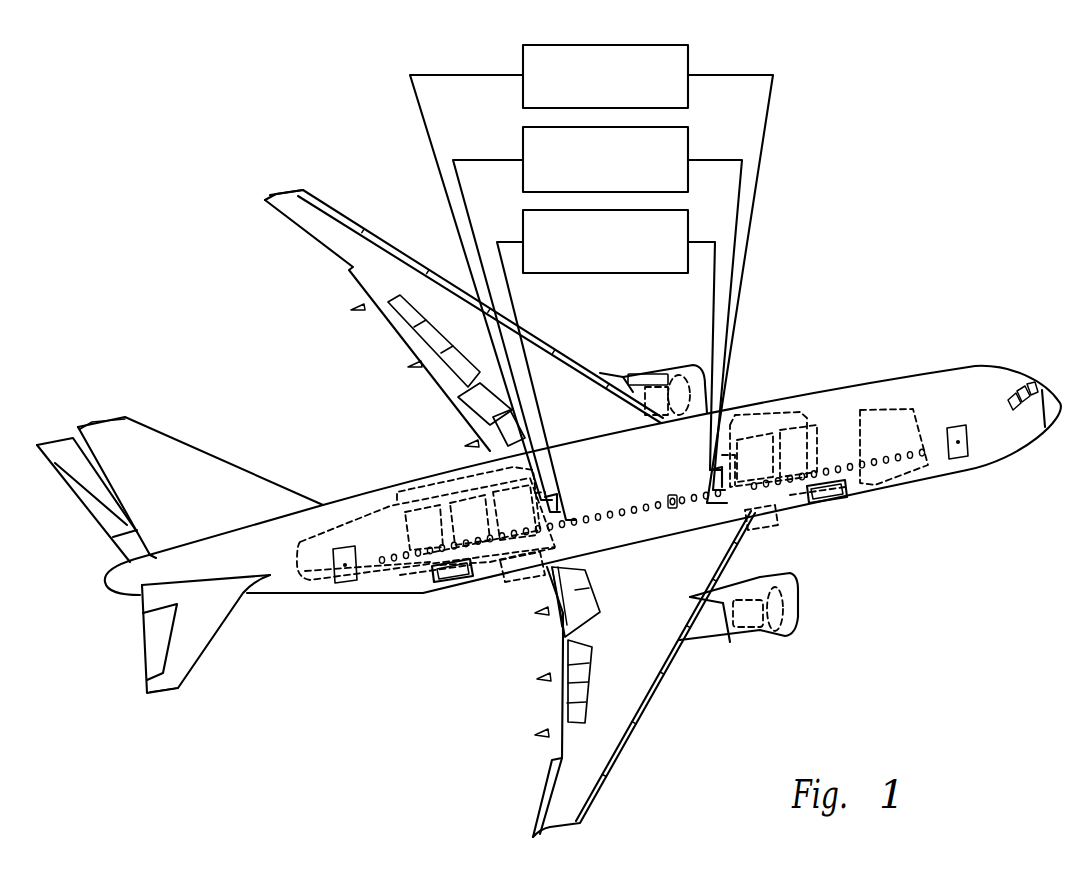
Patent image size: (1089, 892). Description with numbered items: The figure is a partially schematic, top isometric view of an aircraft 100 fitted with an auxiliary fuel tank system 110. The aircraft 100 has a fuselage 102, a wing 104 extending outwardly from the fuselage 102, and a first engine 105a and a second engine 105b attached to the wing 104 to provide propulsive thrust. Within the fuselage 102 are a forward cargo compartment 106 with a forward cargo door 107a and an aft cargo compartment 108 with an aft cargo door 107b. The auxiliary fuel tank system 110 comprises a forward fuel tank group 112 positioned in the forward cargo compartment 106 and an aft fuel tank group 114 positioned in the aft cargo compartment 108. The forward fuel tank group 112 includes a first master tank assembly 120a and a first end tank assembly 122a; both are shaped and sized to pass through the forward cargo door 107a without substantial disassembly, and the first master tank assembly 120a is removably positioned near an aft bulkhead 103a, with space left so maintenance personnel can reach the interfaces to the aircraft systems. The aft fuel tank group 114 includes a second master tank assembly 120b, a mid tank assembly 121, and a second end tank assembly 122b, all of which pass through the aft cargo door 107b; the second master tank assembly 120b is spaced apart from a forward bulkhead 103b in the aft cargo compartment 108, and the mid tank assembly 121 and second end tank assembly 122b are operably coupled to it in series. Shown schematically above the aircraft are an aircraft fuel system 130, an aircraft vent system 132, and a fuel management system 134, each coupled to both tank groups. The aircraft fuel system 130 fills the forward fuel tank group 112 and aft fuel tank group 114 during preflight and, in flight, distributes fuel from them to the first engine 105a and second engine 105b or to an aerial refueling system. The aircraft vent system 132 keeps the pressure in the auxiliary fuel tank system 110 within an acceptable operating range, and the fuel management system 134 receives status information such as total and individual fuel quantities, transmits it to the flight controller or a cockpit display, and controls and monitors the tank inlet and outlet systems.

The aircraft 100 is at (907, 207).
The fuselage 102 is at (968, 471).
The aft bulkhead 103a is at (720, 463).
The forward bulkhead 103b is at (543, 497).
The wing 104 is at (340, 205).
The first engine 105a is at (680, 370).
The second engine 105b is at (777, 643).
The forward cargo compartment 106 is at (867, 410).
The forward cargo door 107a is at (833, 497).
The aft cargo door 107b is at (437, 582).
The aft cargo compartment 108 is at (383, 512).
The auxiliary fuel tank system 110 is at (563, 558).
The forward fuel tank group 112 is at (767, 415).
The aft fuel tank group 114 is at (450, 480).
The first master tank assembly 120a is at (753, 520).
The second master tank assembly 120b is at (535, 577).
The mid tank assembly 121 is at (490, 575).
The first end tank assembly 122a is at (820, 497).
The second end tank assembly 122b is at (437, 580).
The aircraft fuel system 130 is at (688, 53).
The aircraft vent system 132 is at (688, 138).
The fuel management system 134 is at (617, 275).